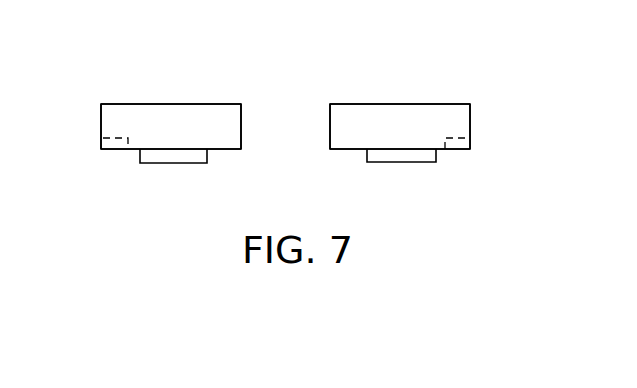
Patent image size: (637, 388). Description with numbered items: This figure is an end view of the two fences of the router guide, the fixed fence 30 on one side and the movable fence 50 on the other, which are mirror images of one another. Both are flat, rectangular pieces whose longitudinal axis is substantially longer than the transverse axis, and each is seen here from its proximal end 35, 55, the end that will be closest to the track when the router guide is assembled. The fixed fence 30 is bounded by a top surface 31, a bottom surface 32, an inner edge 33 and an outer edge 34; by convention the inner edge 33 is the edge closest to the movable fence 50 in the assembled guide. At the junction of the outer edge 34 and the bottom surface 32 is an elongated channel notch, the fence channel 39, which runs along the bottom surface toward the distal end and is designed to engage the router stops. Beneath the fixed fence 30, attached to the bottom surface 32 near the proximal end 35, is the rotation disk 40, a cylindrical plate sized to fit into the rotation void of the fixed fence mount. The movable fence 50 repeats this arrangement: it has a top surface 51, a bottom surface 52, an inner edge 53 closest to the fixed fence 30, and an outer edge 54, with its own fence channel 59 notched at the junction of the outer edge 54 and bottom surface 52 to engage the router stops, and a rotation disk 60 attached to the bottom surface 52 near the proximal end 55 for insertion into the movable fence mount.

The fixed fence 30 is at (143, 104).
The top surface 31 is at (198, 104).
The bottom surface 32 is at (220, 150).
The inner edge 33 is at (241, 125).
The outer edge 34 is at (101, 122).
The proximal end 35 is at (182, 136).
The fence channel 39 is at (115, 143).
The rotation disk 40 is at (158, 165).
The movable fence 50 is at (427, 104).
The top surface 51 is at (368, 104).
The bottom surface 52 is at (357, 150).
The inner edge 53 is at (330, 127).
The outer edge 54 is at (470, 119).
The proximal end 55 is at (406, 136).
The fence channel 59 is at (460, 148).
The rotation disk 60 is at (393, 155).